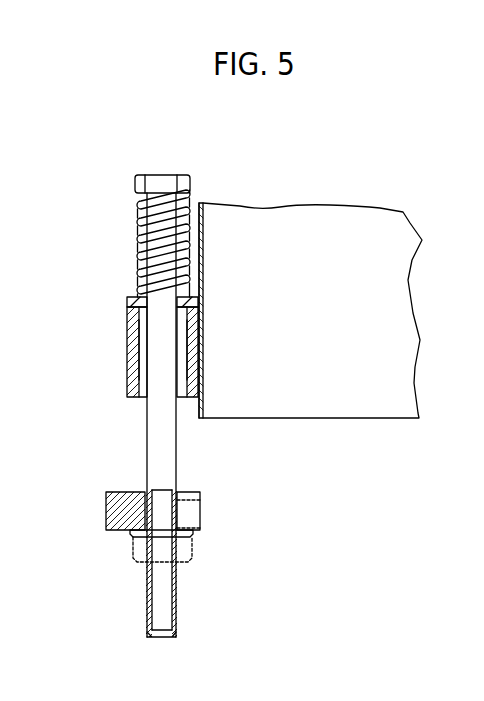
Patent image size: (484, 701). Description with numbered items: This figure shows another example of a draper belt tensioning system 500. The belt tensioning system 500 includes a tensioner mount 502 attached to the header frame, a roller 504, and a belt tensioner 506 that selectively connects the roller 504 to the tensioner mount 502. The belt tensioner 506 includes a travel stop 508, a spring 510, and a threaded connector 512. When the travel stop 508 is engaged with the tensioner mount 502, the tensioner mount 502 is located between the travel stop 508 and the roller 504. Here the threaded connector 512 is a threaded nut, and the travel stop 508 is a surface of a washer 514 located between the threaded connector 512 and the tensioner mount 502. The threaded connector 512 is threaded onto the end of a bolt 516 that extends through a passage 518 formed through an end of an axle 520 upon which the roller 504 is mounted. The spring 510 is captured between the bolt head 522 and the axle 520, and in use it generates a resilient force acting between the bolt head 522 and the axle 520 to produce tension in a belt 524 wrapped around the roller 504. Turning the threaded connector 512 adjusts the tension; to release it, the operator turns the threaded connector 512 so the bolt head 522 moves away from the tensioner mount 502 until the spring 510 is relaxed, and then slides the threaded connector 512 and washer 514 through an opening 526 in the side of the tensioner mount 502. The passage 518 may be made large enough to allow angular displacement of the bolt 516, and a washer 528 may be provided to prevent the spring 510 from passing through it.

The belt tensioning system 500 is at (308, 505).
The tensioner mount 502 is at (106, 503).
The roller 504 is at (203, 293).
The belt tensioner 506 is at (146, 431).
The travel stop 508 is at (185, 530).
The spring 510 is at (138, 236).
The threaded connector 512 is at (188, 548).
The washer 514 is at (131, 533).
The bolt 516 is at (160, 337).
The passage 518 is at (183, 397).
The axle 520 is at (127, 352).
The bolt head 522 is at (137, 176).
The belt 524 is at (288, 232).
The opening 526 is at (192, 501).
The washer 528 is at (128, 300).